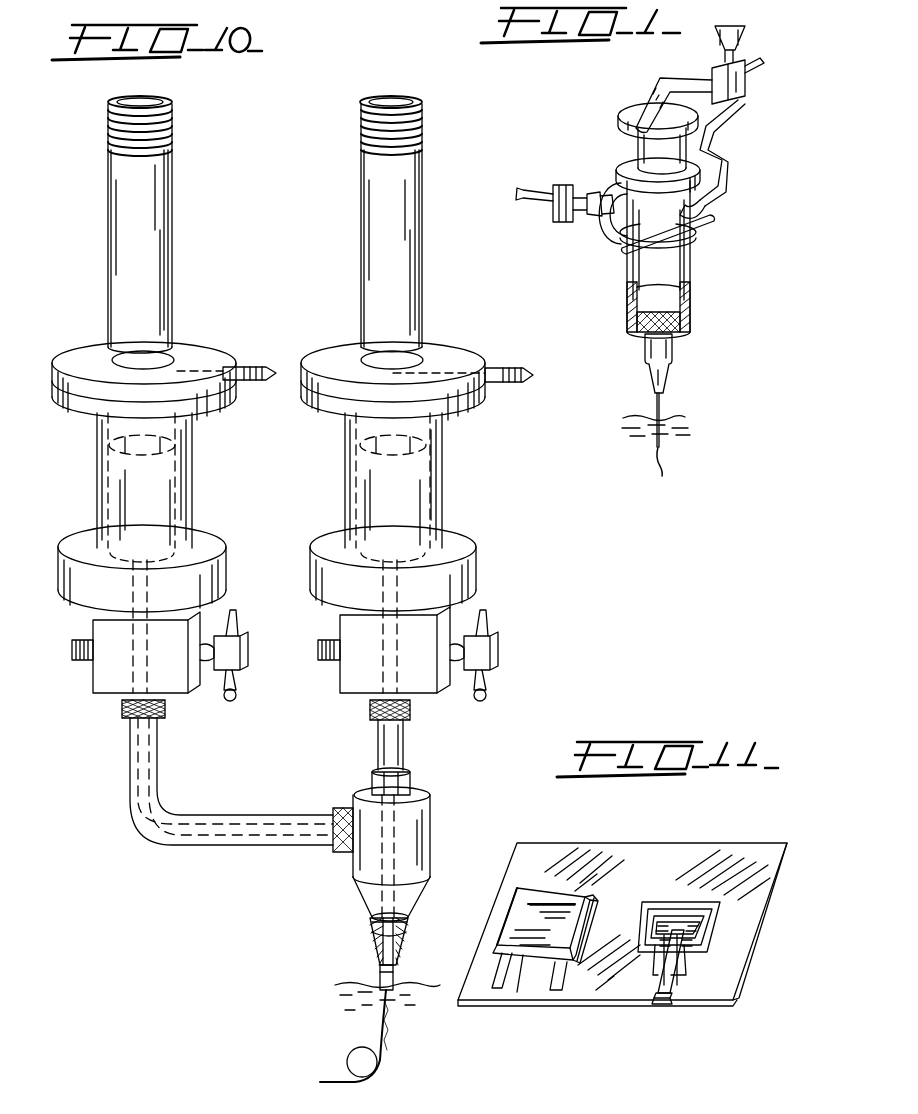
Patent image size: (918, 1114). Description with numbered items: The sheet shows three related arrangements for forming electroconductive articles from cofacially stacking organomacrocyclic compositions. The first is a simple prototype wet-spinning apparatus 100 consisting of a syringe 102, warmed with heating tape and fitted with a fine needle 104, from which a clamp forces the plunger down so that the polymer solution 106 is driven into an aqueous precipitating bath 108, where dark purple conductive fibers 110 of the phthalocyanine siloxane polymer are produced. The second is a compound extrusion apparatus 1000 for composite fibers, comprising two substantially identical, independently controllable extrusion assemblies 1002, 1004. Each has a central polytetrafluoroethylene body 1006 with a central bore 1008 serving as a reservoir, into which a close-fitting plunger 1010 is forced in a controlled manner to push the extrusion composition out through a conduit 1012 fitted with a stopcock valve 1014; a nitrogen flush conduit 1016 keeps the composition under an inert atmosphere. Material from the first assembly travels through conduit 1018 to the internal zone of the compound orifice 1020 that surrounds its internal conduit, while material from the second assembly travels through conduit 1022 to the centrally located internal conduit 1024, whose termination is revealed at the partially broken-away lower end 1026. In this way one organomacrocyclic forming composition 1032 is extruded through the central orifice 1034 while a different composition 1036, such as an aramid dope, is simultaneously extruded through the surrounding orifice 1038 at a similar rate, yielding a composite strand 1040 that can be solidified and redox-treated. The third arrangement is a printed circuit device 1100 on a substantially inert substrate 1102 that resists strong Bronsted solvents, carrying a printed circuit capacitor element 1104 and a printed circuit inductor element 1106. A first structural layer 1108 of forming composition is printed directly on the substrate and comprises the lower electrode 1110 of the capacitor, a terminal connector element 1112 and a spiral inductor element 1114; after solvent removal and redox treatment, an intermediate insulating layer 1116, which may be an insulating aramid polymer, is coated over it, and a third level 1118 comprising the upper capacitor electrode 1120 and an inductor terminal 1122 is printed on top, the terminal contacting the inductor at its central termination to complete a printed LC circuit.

In FIG. 1, the wet-spinning apparatus 100 is at (604, 170).
In FIG. 1, the syringe 102 is at (690, 260).
In FIG. 1, the capillary needle 104 is at (665, 398).
In FIG. 1, the polymer solution 106 is at (686, 322).
In FIG. 1, the aqueous precipitating bath 108 is at (636, 418).
In FIG. 1, the fiber 110 is at (659, 448).
In FIG. 10, the compound extrusion apparatus 1000 is at (97, 230).
In FIG. 10, the extrusion assembly 1002 is at (68, 364).
In FIG. 10, the extrusion assembly 1004 is at (445, 345).
In FIG. 10, the central polytetrafluoroethylene body 1006 is at (82, 548).
In FIG. 10, the central bore 1008 is at (110, 498).
In FIG. 10, the plunger 1010 is at (155, 248).
In FIG. 10, the conduit 1012 is at (138, 658).
In FIG. 10, the stopcock valve 1014 is at (226, 630).
In FIG. 10, the nitrogen flush conduit 1016 is at (240, 367).
In FIG. 10, the conduit 1018 is at (170, 845).
In FIG. 10, the compound orifice 1020 is at (428, 858).
In FIG. 10, the conduit 1022 is at (400, 739).
In FIG. 10, the central conduit 1024 is at (395, 844).
In FIG. 10, the lower end 1026 is at (400, 936).
In FIG. 10, the organomacrocyclic forming composition 1032 is at (405, 504).
In FIG. 10, the central orifice 1034 is at (378, 941).
In FIG. 10, the different composition 1036 is at (160, 498).
In FIG. 10, the surrounding orifice 1038 is at (378, 979).
In FIG. 10, the fiber 1040 is at (383, 1051).
In FIG. 11, the printed circuit device 1100 is at (740, 1015).
In FIG. 11, the substrate 1102 is at (715, 852).
In FIG. 11, the printed circuit capacitor element 1104 is at (595, 893).
In FIG. 11, the printed circuit inductor element 1106 is at (712, 934).
In FIG. 11, the first structural layer 1108 is at (563, 977).
In FIG. 11, the lower electrode 1110 is at (518, 977).
In FIG. 11, the terminal connector element 1112 is at (543, 990).
In FIG. 11, the spiral inductor element 1114 is at (652, 905).
In FIG. 11, the intermediate insulating layer 1116 is at (508, 912).
In FIG. 11, the third level 1118 is at (558, 904).
In FIG. 11, the upper capacitor electrode 1120 is at (533, 907).
In FIG. 11, the inductor terminal 1122 is at (662, 1004).